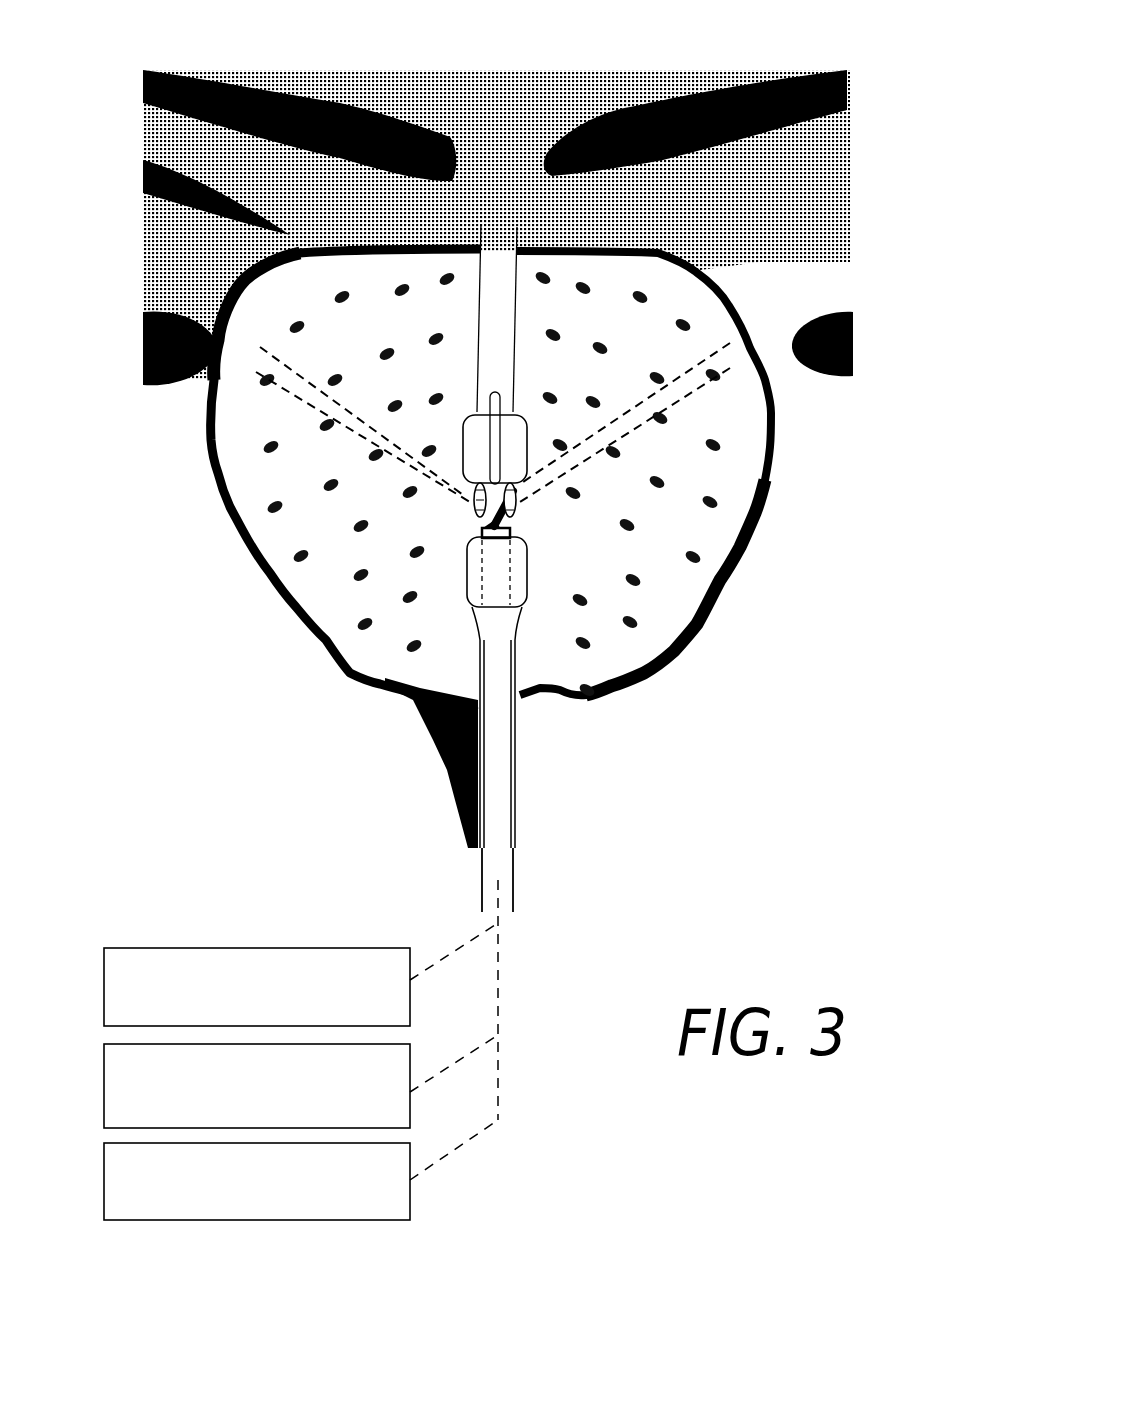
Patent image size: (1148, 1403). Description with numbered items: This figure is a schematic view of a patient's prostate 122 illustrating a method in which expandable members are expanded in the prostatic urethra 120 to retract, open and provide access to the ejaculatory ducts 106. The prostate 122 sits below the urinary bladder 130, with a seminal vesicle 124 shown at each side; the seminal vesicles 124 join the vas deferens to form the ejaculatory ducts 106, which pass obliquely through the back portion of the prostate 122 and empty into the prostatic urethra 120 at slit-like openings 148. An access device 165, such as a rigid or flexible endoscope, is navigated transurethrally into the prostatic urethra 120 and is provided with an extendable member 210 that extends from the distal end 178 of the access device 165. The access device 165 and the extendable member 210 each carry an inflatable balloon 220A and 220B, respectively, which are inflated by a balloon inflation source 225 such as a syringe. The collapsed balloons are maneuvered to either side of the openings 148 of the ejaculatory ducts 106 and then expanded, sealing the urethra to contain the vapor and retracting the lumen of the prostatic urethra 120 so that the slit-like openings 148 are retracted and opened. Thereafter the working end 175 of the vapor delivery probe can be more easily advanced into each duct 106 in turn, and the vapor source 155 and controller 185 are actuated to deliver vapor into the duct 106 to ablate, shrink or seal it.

The urinary bladder 130 is at (633, 90).
The seminal vesicle 124 is at (173, 315).
The prostate 122 is at (727, 486).
The ejaculatory ducts 106 is at (323, 405).
The extendable member 210 is at (486, 406).
The inflatable balloon 220B is at (474, 446).
The working end 175 is at (470, 506).
The prostatic urethra 120 is at (470, 526).
The slit-like openings 148 is at (521, 515).
The distal end 178 is at (519, 537).
The inflatable balloon 220A is at (474, 590).
The access device 165 is at (513, 872).
The vapor source 155 is at (301, 974).
The controller 185 is at (301, 1081).
The balloon inflation source 225 is at (301, 1170).